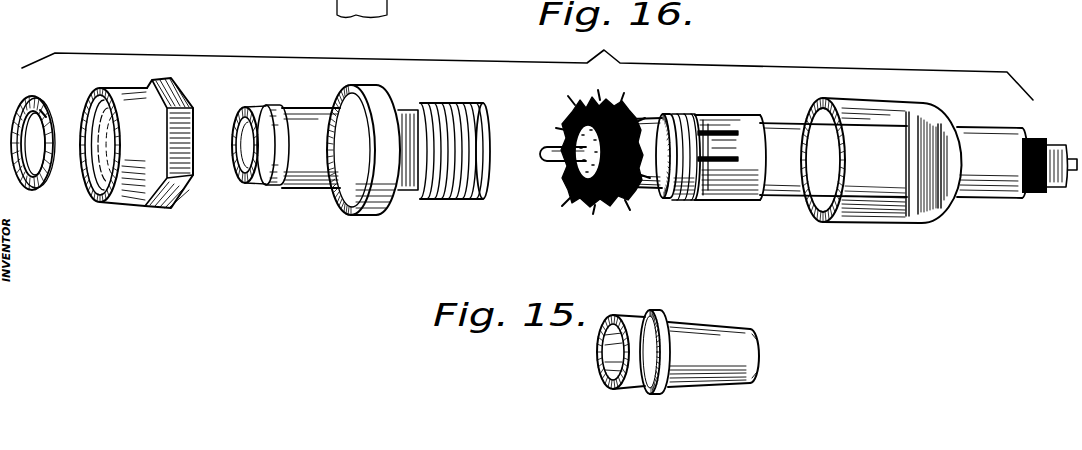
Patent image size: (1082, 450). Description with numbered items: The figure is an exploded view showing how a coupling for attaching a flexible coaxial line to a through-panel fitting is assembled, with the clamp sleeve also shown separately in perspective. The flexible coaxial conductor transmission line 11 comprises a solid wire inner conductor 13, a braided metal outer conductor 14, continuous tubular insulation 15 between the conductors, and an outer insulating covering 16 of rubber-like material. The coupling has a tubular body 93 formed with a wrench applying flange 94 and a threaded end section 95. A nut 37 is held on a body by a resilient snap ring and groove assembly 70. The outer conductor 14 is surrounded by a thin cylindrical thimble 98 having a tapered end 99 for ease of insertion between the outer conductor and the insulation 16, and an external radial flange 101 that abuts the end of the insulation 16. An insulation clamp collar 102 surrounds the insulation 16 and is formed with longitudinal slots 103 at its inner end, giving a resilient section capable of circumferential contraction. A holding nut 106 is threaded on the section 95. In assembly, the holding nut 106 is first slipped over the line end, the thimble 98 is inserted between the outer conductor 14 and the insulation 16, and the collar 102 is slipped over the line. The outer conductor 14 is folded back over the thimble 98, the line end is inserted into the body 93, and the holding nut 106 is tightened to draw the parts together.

In FIG. 16, the resilient snap ring and groove assembly 70 is at (43, 110).
In FIG. 16, the nut 37 is at (177, 95).
In FIG. 16, the tubular body 93 is at (300, 118).
In FIG. 16, the wrench applying flange 94 is at (380, 92).
In FIG. 16, the threaded end section 95 is at (470, 105).
In FIG. 16, the inner conductor 13 is at (554, 161).
In FIG. 16, the outer conductor 14 is at (588, 113).
In FIG. 16, the tubular insulation 15 is at (574, 140).
In FIG. 16, the thimble 98 is at (640, 128).
In FIG. 15, the thimble 98 is at (729, 330).
In FIG. 16, the external radial flange 101 is at (660, 117).
In FIG. 15, the external radial flange 101 is at (663, 313).
In FIG. 16, the outer insulating covering 16 is at (673, 115).
In FIG. 16, the longitudinal slots 103 is at (713, 157).
In FIG. 16, the insulation clamp collar 102 is at (737, 123).
In FIG. 16, the flexible coaxial conductor transmission line 11 is at (792, 118).
In FIG. 16, the holding nut 106 is at (870, 107).
In FIG. 15, the tapered end 99 is at (757, 342).